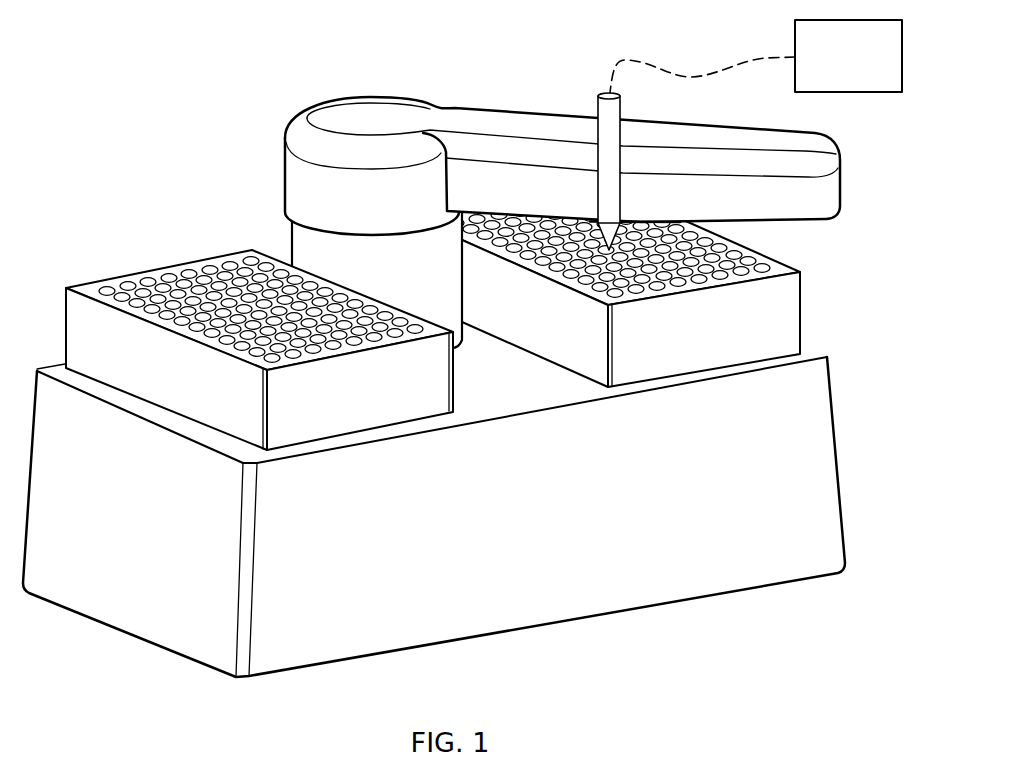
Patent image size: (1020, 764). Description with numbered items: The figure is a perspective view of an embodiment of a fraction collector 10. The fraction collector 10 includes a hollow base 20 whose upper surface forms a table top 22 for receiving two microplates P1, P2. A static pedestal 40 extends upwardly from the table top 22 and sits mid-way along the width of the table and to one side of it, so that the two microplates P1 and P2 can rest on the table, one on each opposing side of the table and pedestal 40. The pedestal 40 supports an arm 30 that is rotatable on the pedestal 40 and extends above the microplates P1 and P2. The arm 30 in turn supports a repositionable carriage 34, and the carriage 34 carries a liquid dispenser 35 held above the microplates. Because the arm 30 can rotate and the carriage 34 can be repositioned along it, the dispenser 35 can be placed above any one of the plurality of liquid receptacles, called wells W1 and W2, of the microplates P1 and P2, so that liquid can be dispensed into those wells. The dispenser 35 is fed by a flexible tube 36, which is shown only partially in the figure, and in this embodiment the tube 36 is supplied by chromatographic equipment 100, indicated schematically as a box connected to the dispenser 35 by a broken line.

The fraction collector 10 is at (125, 73).
The hollow base 20 is at (193, 640).
The table top 22 is at (520, 399).
The arm 30 is at (489, 122).
The repositionable carriage 34 is at (638, 218).
The liquid dispenser 35 is at (607, 133).
The flexible tube 36 is at (606, 93).
The static pedestal 40 is at (325, 253).
The chromatographic equipment 100 is at (823, 71).
The microplate P1 is at (150, 270).
The microplate P2 is at (803, 318).
The wells W1 is at (127, 283).
The wells W2 is at (765, 258).